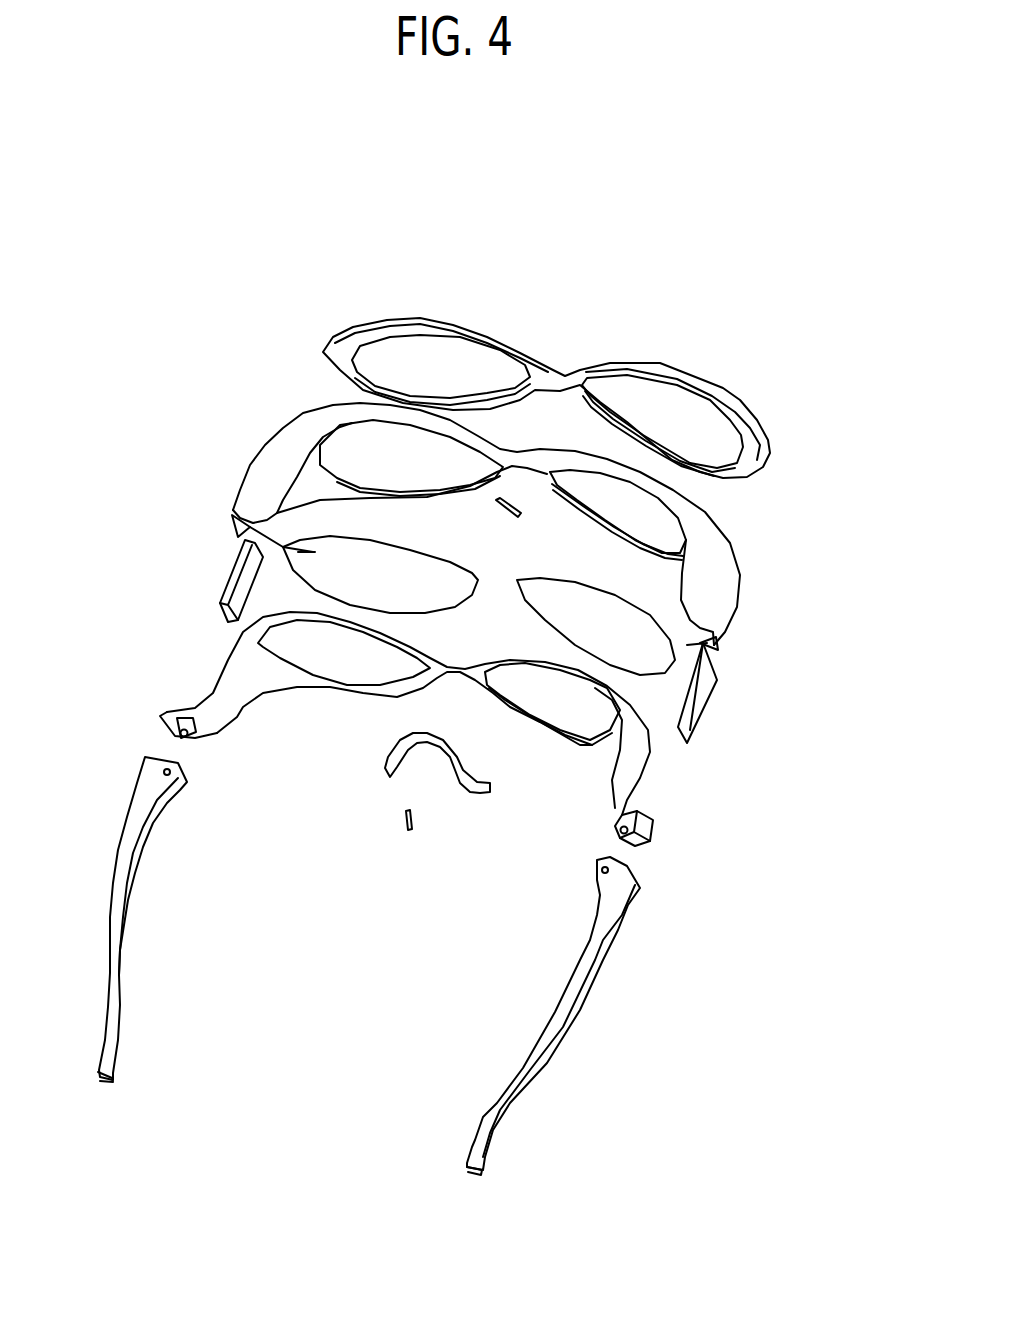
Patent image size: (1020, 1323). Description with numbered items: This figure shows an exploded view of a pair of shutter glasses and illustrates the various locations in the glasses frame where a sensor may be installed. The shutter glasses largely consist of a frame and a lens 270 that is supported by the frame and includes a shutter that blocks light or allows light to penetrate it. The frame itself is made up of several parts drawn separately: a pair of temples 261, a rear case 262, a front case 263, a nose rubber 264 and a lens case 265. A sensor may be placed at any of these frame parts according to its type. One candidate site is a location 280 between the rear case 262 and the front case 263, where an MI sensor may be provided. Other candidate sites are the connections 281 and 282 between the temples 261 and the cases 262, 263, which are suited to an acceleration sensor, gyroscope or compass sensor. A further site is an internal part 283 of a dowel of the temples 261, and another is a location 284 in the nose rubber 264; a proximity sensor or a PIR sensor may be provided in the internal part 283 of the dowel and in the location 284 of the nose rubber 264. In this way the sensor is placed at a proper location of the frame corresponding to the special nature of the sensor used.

The temples 261 is at (108, 1083).
The rear case 262 is at (453, 729).
The front case 263 is at (272, 453).
The nose rubber 264 is at (478, 793).
The lens case 265 is at (673, 380).
The lens 270 is at (232, 516).
The location between rear case and front case 280 is at (505, 498).
The connection between temples and cases 281 is at (717, 690).
The connection between temples and cases 282 is at (227, 593).
The internal part of a dowel of temples 283 is at (657, 803).
The location in nose rubber 284 is at (407, 832).